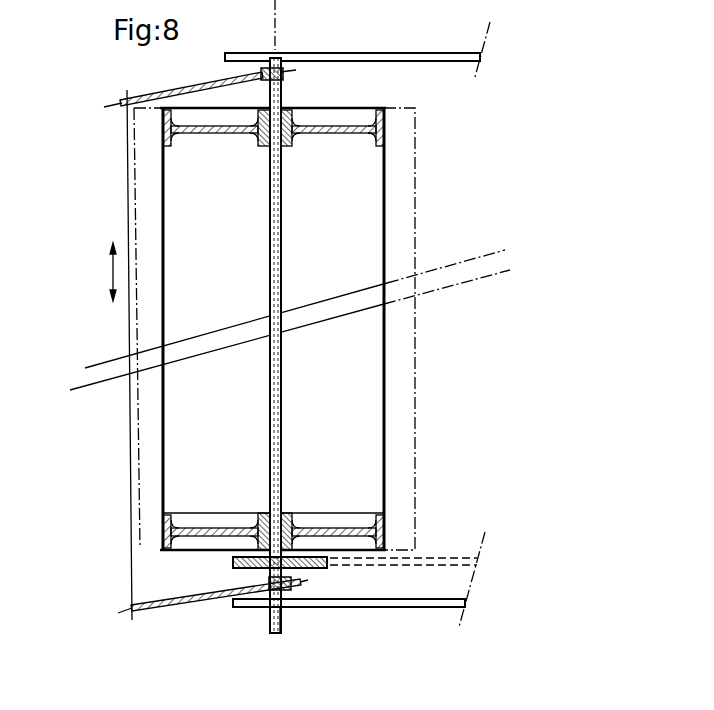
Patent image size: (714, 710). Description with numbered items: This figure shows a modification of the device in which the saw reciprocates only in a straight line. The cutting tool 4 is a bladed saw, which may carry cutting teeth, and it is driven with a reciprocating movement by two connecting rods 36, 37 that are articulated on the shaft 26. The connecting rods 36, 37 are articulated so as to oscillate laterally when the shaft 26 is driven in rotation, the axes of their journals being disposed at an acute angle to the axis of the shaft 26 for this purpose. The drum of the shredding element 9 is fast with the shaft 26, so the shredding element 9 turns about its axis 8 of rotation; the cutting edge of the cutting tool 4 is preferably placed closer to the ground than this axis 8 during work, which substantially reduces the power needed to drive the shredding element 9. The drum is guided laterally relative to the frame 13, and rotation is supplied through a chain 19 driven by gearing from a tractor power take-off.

The cutting tool 4 is at (127, 172).
The axis of rotation 8 is at (278, 620).
The shredding element 9 is at (384, 208).
The frame 13 is at (405, 606).
The chain 19 is at (430, 557).
The shaft 26 is at (282, 277).
The connecting rod 36 is at (170, 93).
The connecting rod 37 is at (172, 607).